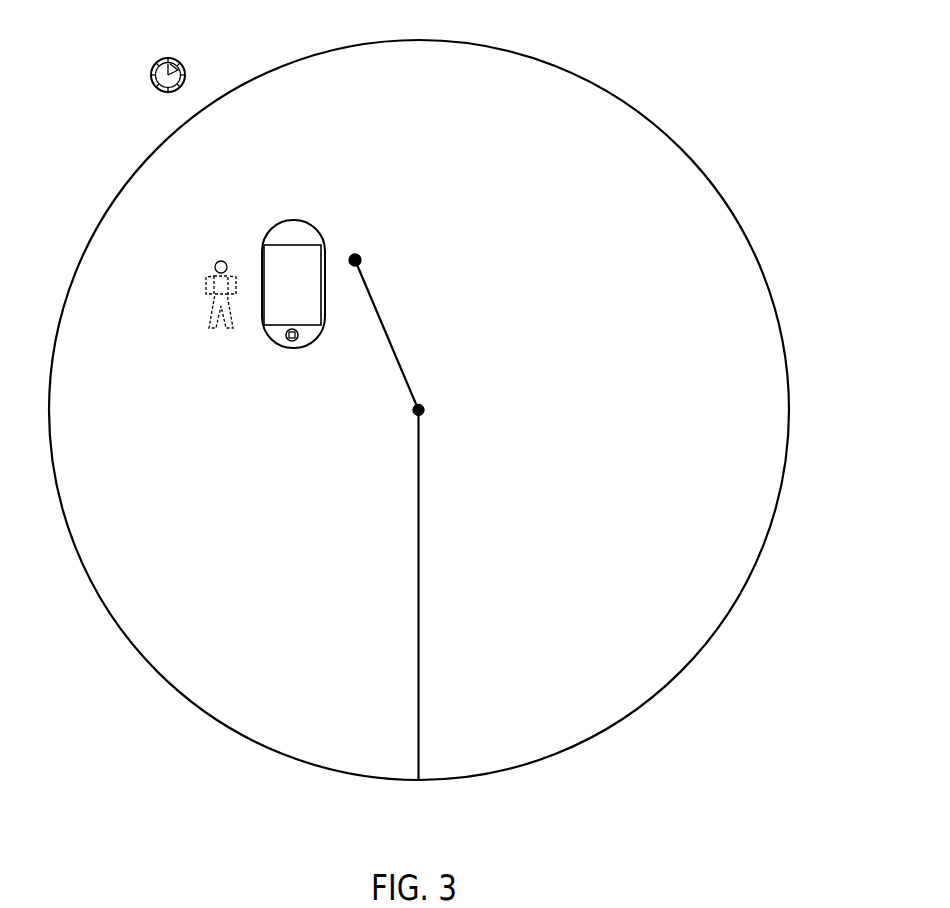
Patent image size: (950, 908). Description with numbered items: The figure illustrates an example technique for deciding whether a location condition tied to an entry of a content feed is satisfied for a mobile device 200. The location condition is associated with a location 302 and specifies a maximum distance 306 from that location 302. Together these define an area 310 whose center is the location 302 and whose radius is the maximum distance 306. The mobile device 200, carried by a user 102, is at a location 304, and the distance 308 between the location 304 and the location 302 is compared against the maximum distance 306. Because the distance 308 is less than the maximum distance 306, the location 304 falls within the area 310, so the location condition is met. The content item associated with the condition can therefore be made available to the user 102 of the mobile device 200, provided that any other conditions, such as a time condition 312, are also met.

The user 102 is at (235, 353).
The mobile device 200 is at (239, 224).
The location 302 is at (424, 410).
The location of mobile device 304 is at (361, 260).
The maximum distance 306 is at (419, 496).
The distance 308 is at (389, 337).
The area 310 is at (790, 398).
The time condition 312 is at (165, 57).